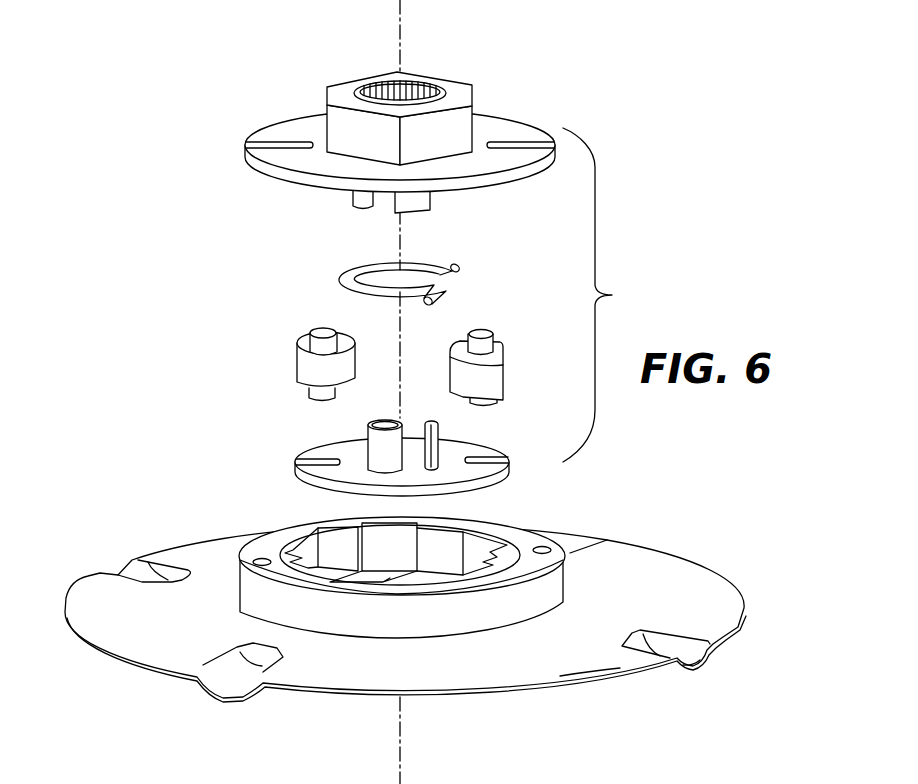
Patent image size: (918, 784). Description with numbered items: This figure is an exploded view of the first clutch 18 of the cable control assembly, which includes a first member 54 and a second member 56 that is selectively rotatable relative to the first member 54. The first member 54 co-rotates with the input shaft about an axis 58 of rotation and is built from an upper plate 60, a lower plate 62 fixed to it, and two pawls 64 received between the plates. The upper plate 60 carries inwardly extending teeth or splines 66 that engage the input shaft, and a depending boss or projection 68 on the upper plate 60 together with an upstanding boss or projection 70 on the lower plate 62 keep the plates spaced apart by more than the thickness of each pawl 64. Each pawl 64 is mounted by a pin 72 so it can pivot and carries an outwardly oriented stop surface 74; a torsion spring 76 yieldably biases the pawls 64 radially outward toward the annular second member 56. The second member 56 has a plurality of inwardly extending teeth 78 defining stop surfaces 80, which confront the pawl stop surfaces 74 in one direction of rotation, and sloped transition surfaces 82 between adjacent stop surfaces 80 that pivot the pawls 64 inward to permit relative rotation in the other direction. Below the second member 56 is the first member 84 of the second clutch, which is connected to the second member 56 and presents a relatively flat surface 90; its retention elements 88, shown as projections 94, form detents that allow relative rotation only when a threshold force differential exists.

The first clutch 18 is at (204, 209).
The first member 54 is at (605, 295).
The second member 56 is at (443, 589).
The axis of rotation 58 is at (402, 11).
The upper plate 60 is at (409, 132).
The lower plate 62 is at (376, 455).
The pawl 64 is at (387, 354).
The teeth or splines 66 is at (417, 97).
The boss or projection 68 is at (418, 203).
The boss or projection 70 is at (383, 444).
The pin 72 is at (321, 334).
The stop surface 74 is at (347, 337).
The torsion spring 76 is at (433, 270).
The teeth 78 is at (407, 589).
The stop surface 80 is at (357, 538).
The transition surface 82 is at (433, 558).
The first member 84 is at (439, 637).
The retention element 88 is at (725, 652).
The flat surface 90 is at (600, 679).
The projection 94 is at (231, 698).